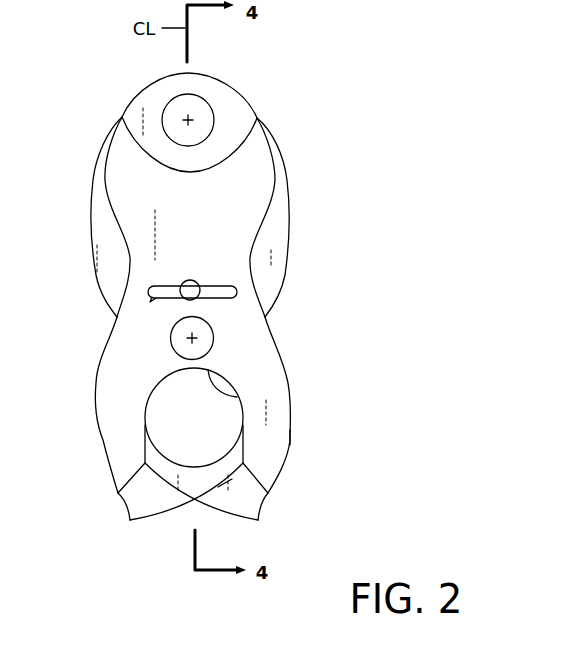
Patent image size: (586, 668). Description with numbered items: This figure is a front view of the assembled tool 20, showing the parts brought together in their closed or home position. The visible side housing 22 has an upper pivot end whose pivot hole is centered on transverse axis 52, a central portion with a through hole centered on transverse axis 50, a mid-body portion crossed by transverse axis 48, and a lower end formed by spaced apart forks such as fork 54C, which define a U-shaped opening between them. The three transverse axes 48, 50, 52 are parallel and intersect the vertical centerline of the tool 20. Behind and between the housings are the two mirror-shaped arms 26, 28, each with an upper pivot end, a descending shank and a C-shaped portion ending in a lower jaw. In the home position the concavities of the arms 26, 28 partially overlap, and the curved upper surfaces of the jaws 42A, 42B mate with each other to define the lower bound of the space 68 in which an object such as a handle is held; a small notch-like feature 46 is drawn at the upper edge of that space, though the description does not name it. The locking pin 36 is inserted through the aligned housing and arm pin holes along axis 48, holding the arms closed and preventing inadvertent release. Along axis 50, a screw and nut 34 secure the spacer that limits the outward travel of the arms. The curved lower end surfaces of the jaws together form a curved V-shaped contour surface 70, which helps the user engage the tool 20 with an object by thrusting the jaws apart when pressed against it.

The tool 20 is at (333, 302).
The side housing 22 is at (275, 372).
The arm 26 is at (110, 223).
The arm 28 is at (272, 213).
The nut 34 is at (214, 338).
The locking pin 36 is at (198, 284).
The jaw 42A is at (190, 415).
The jaw 42B is at (137, 507).
The notch 46 is at (238, 398).
The transverse axis 48 is at (240, 297).
The transverse axis 50 is at (170, 340).
The transverse axis 52 is at (190, 118).
The fork 54C is at (112, 437).
The space 68 is at (227, 425).
The V shape contour surface 70 is at (193, 515).